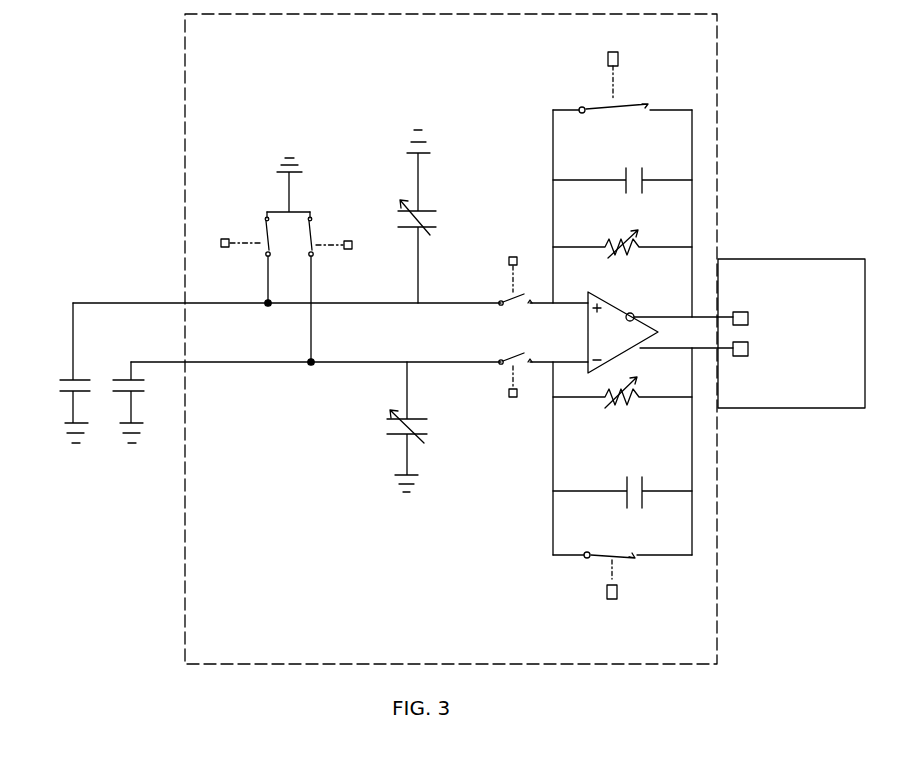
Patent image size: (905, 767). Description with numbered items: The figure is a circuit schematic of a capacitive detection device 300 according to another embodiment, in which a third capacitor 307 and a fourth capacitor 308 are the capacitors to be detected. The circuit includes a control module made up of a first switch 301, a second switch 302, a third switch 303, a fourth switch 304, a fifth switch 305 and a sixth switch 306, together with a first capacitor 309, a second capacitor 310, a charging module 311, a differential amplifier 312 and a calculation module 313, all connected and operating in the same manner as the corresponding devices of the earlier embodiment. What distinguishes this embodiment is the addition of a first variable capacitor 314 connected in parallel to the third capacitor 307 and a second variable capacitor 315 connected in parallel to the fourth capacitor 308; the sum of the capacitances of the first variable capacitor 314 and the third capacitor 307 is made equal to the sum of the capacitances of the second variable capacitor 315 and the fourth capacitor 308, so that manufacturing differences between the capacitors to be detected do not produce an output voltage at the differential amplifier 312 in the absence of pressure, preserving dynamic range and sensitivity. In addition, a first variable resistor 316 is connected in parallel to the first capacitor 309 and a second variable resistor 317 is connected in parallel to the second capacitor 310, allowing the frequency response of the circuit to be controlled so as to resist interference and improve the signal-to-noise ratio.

The amplifier circuit 300 is at (451, 339).
The first switch 301 is at (227, 246).
The second switch 302 is at (357, 248).
The third switch 303 is at (517, 263).
The fourth switch 304 is at (516, 391).
The fifth switch 305 is at (622, 72).
The sixth switch 306 is at (622, 596).
The third capacitor 307 is at (55, 373).
The fourth capacitor 308 is at (149, 402).
The first capacitor 309 is at (622, 170).
The second capacitor 310 is at (622, 506).
The charging module 311 is at (289, 256).
The differential amplifier 312 is at (643, 332).
The calculation module 313 is at (791, 333).
The first variable capacitor 314 is at (435, 216).
The second variable capacitor 315 is at (427, 427).
The first variable resistor 316 is at (622, 235).
The second variable resistor 317 is at (622, 408).